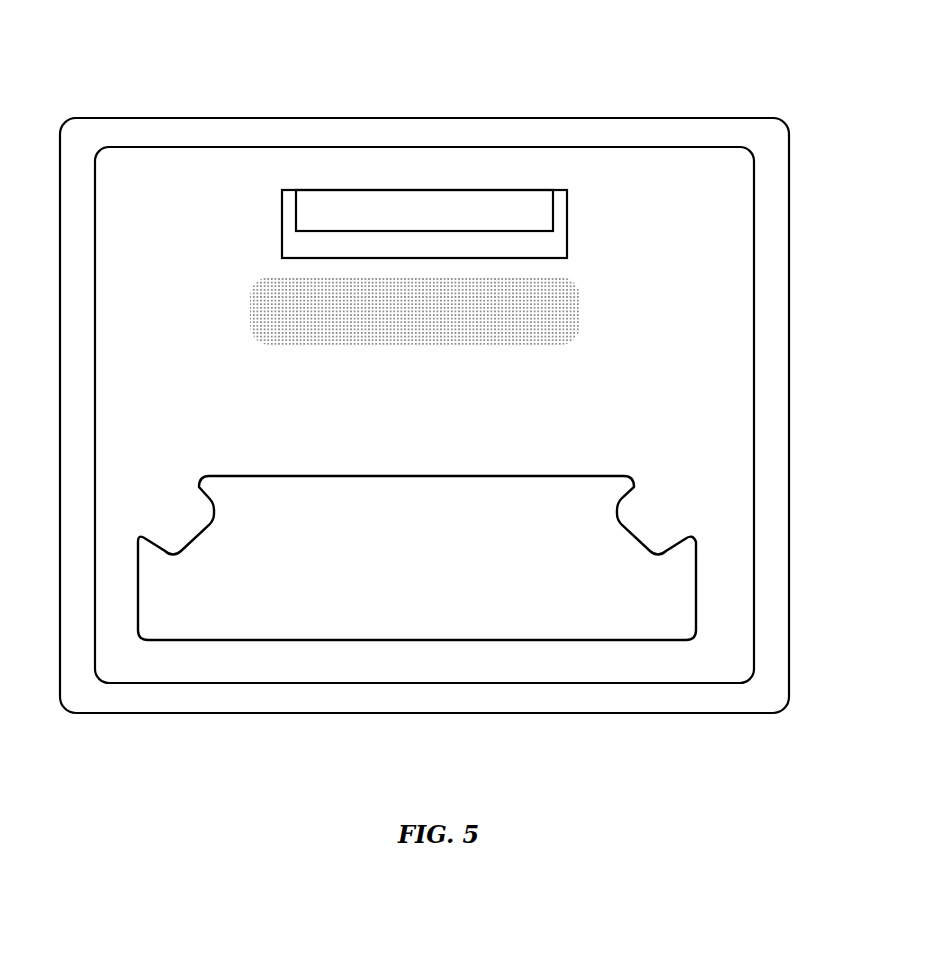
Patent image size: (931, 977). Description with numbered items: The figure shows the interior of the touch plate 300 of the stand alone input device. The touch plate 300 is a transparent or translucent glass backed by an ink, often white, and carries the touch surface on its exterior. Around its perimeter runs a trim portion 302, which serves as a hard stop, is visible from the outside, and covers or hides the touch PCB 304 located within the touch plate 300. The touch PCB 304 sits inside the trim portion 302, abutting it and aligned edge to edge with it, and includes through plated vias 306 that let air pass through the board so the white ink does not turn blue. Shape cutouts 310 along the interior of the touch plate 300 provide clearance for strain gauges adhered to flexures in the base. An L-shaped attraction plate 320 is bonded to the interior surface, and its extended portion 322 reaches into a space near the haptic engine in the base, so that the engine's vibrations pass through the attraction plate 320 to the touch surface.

The touch plate 300 is at (474, 70).
The trim portion 302 is at (775, 663).
The touch PCB 304 is at (424, 415).
The through plated vias 306 is at (573, 319).
The shape cutouts 310 is at (685, 582).
The attraction plate 320 is at (454, 224).
The extended portion 322 is at (424, 210).